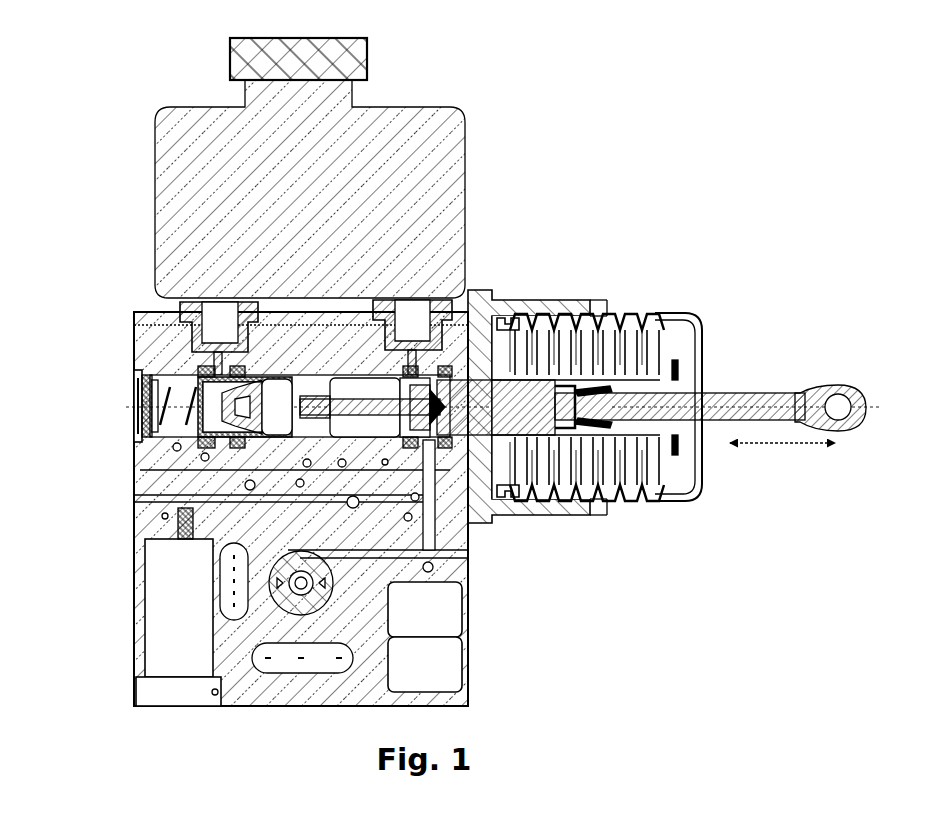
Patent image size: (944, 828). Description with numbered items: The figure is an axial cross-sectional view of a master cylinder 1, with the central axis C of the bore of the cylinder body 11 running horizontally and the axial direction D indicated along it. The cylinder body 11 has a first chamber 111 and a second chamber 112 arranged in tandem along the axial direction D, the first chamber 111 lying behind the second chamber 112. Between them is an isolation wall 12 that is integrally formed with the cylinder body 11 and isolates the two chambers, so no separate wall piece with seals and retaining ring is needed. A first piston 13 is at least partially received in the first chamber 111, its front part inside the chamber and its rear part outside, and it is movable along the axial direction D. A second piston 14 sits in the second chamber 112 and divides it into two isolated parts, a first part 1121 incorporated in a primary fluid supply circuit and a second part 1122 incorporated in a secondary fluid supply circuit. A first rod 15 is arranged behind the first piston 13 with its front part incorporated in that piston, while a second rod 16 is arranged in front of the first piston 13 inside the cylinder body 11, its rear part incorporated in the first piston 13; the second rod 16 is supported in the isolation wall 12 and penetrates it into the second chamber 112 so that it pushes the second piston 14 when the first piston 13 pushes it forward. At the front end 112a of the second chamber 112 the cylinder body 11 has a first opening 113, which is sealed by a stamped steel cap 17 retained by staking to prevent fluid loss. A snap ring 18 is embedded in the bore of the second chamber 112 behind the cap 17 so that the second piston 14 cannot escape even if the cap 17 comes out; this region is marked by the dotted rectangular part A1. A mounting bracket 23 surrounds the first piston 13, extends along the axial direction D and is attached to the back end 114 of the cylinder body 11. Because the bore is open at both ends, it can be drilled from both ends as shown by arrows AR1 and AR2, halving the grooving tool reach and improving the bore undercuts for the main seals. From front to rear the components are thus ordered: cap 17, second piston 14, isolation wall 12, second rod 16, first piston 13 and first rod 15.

The master cylinder 1 is at (385, 22).
The cylinder body 11 is at (150, 310).
The isolation wall 12 is at (302, 424).
The first piston 13 is at (504, 392).
The second piston 14 is at (254, 436).
The first rod 15 is at (776, 402).
The second rod 16 is at (353, 396).
The cap 17 is at (137, 380).
The snap ring 18 is at (147, 372).
The mounting bracket 23 is at (477, 330).
The first chamber 111 is at (369, 430).
The second chamber 112 is at (205, 426).
The end of the second chamber 112a is at (141, 455).
The first opening 113 is at (131, 440).
The back end of the cylinder body 114 is at (472, 504).
The first part 1121 is at (276, 392).
The second part 1122 is at (184, 388).
The dotted rectangular part A1 is at (413, 322).
The central axis C is at (496, 406).
The axial direction D is at (782, 452).
The arrow AR1 is at (442, 562).
The arrow AR2 is at (172, 558).